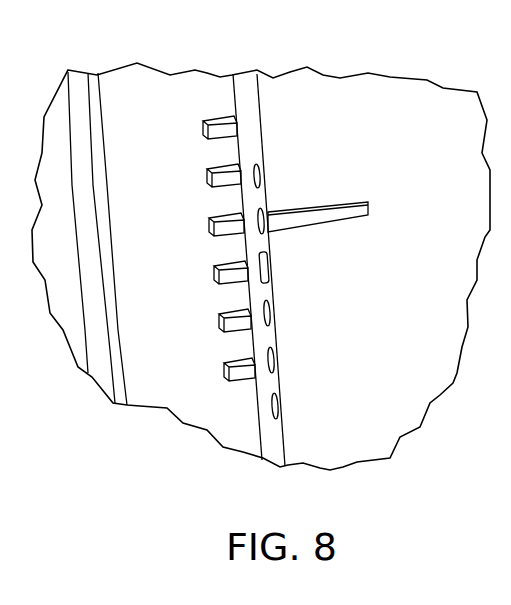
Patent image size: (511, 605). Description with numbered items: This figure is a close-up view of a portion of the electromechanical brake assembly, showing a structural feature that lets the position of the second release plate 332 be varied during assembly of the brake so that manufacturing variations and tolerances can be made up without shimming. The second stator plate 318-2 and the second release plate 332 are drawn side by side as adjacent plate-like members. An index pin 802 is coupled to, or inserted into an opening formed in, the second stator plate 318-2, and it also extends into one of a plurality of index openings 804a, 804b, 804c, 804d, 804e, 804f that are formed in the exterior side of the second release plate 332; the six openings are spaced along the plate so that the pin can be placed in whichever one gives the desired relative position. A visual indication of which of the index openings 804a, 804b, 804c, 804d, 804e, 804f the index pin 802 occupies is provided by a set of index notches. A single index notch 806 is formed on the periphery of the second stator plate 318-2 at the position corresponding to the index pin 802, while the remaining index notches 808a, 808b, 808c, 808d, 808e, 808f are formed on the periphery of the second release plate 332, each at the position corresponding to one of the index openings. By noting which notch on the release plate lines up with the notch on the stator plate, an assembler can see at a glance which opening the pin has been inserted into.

The second stator plate 318-2 is at (380, 83).
The second release plate 332 is at (205, 77).
The index pin 802 is at (270, 270).
The index opening 804a is at (265, 177).
The index opening 804b is at (268, 212).
The index opening 804c is at (270, 262).
The index opening 804d is at (273, 312).
The index opening 804e is at (278, 358).
The index opening 804f is at (282, 405).
The index notch 806 is at (368, 206).
The index notch 808a is at (203, 128).
The index notch 808b is at (207, 177).
The index notch 808c is at (209, 226).
The index notch 808d is at (214, 274).
The index notch 808e is at (219, 322).
The index notch 808f is at (224, 371).